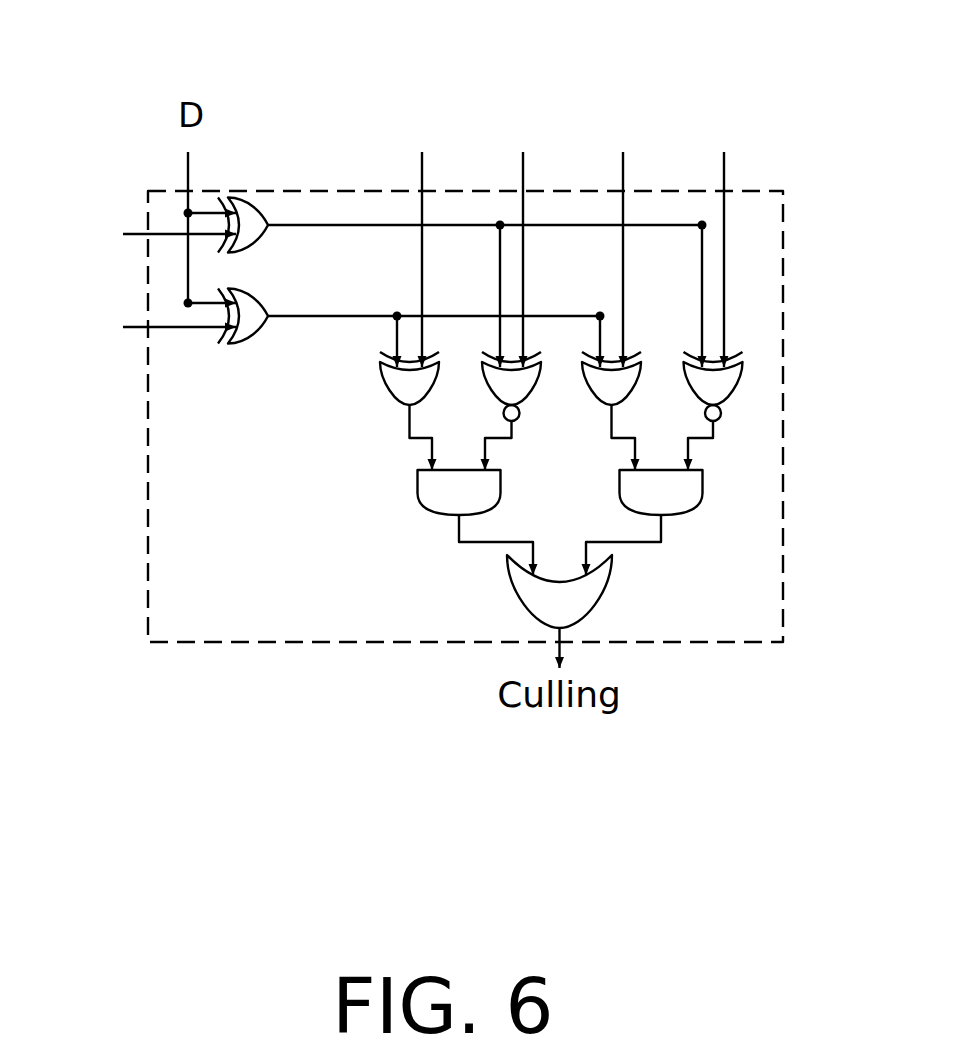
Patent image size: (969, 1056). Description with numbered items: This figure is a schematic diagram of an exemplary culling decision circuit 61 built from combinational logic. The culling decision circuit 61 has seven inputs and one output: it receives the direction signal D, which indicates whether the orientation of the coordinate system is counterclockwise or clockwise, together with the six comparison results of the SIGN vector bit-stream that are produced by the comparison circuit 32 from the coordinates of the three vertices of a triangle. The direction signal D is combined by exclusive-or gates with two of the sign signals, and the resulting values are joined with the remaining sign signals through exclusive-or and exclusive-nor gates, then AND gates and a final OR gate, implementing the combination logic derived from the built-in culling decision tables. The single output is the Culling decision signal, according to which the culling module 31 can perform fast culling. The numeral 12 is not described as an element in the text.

The culling decision circuit 61 is at (798, 157).
The sample 12 sign signals SX12 and SY12 12 is at (137, 277).
The culling module 31 is at (472, 231).
The comparison circuit 32 is at (674, 231).